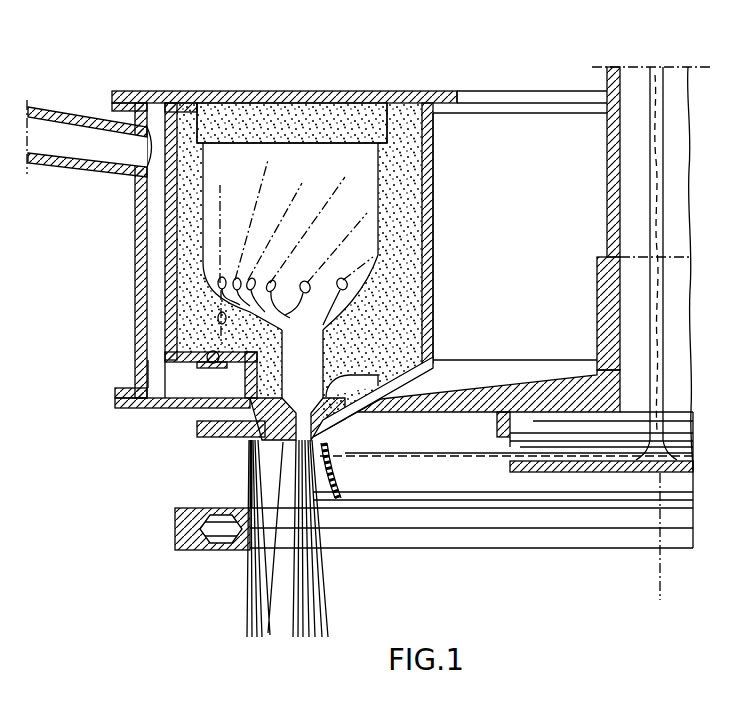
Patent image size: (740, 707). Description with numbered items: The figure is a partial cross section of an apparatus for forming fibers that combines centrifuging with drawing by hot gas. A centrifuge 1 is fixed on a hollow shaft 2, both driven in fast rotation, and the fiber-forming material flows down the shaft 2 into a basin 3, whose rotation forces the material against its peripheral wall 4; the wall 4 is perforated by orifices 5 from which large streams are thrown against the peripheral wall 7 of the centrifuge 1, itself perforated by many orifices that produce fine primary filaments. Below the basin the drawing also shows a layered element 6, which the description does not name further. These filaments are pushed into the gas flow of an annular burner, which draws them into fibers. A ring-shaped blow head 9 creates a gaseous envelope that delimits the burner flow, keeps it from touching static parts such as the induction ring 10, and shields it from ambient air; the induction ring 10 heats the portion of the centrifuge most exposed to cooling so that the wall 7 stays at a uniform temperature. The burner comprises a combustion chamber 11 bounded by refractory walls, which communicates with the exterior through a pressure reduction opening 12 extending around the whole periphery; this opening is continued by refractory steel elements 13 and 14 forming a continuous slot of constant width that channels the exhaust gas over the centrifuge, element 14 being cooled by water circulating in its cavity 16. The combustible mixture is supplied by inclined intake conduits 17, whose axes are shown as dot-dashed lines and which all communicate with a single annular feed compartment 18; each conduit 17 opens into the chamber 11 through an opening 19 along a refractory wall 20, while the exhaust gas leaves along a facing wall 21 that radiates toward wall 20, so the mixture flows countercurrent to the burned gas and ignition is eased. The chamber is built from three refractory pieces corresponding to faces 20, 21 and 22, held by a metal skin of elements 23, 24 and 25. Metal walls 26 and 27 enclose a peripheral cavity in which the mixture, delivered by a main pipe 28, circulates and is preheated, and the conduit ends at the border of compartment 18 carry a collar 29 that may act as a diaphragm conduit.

The centrifuge 1 is at (478, 396).
The shaft 2 is at (255, 84).
The basin 3 is at (562, 474).
The peripheral wall 4 is at (510, 463).
The orifices 5 is at (497, 447).
The web support 6 is at (423, 456).
The peripheral wall 7 is at (327, 468).
The blow head 9 is at (221, 447).
The induction ring 10 is at (190, 507).
The combustion chamber 11 is at (301, 185).
The pressure reduction opening 12 is at (304, 406).
The element 13 is at (277, 447).
The element 14 is at (367, 434).
The cavity 16 is at (401, 378).
The intake conduit 17 is at (220, 323).
The annular feed compartment 18 is at (163, 387).
The opening 19 is at (295, 248).
The refractory wall 20 is at (197, 197).
The wall 21 is at (387, 195).
The face 22 is at (330, 110).
The metal skin element 23 is at (167, 247).
The metal skin element 24 is at (165, 96).
The metal skin element 25 is at (433, 225).
The metal wall 26 is at (143, 312).
The metal wall 27 is at (117, 412).
The main pipe 28 is at (50, 164).
The collar 29 is at (213, 374).